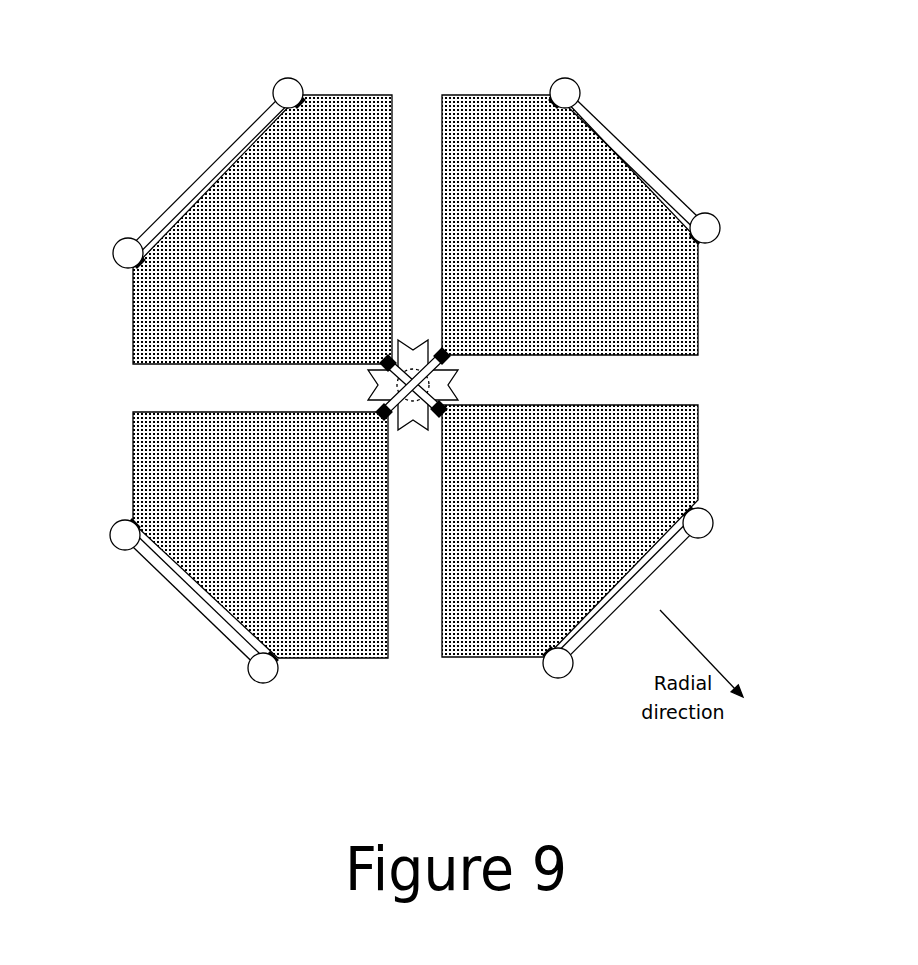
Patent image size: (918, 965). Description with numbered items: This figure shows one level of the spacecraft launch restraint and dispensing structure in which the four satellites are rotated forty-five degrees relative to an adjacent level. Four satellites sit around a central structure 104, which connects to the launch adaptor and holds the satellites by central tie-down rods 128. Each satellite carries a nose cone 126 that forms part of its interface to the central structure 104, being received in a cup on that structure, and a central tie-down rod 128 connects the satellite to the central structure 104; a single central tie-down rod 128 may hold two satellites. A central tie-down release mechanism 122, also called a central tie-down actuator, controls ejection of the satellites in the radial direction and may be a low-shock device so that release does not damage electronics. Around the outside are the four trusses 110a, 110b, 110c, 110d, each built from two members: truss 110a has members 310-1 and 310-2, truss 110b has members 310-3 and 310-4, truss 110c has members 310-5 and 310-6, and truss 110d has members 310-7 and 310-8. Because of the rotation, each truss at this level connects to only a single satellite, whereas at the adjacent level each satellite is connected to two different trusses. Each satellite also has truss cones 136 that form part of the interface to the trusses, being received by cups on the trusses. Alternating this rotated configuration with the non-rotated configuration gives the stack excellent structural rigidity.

The truss 110a is at (190, 138).
The truss 110b is at (683, 160).
The truss 110c is at (690, 570).
The truss 110d is at (148, 603).
The truss cone 136 is at (322, 106).
The member 310-1 is at (115, 243).
The member 310-2 is at (283, 78).
The member 310-3 is at (565, 78).
The member 310-4 is at (720, 228).
The member 310-5 is at (713, 512).
The member 310-6 is at (570, 677).
The member 310-7 is at (277, 681).
The member 310-8 is at (113, 528).
The central structure 104 is at (411, 345).
The central tie-down release mechanism 122 is at (453, 363).
The central tie-down rod 128 is at (380, 378).
The nose cone 126 is at (440, 420).